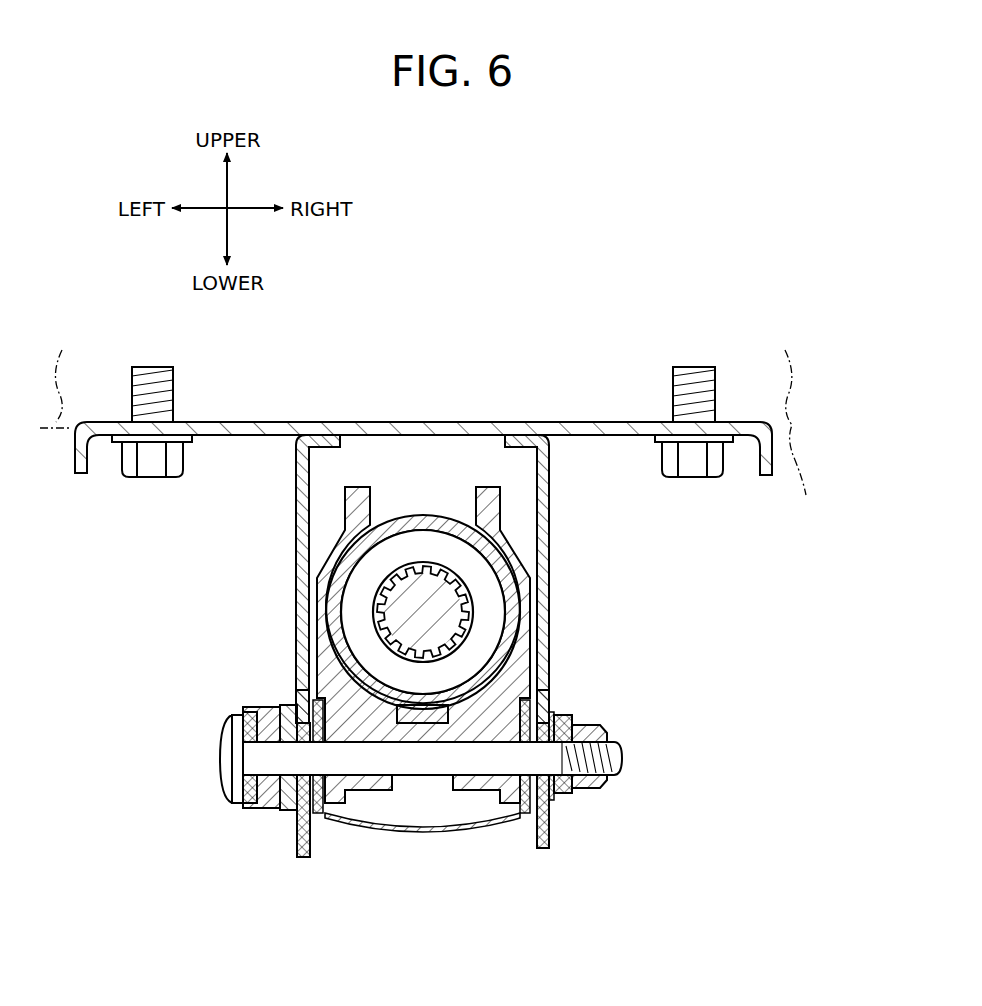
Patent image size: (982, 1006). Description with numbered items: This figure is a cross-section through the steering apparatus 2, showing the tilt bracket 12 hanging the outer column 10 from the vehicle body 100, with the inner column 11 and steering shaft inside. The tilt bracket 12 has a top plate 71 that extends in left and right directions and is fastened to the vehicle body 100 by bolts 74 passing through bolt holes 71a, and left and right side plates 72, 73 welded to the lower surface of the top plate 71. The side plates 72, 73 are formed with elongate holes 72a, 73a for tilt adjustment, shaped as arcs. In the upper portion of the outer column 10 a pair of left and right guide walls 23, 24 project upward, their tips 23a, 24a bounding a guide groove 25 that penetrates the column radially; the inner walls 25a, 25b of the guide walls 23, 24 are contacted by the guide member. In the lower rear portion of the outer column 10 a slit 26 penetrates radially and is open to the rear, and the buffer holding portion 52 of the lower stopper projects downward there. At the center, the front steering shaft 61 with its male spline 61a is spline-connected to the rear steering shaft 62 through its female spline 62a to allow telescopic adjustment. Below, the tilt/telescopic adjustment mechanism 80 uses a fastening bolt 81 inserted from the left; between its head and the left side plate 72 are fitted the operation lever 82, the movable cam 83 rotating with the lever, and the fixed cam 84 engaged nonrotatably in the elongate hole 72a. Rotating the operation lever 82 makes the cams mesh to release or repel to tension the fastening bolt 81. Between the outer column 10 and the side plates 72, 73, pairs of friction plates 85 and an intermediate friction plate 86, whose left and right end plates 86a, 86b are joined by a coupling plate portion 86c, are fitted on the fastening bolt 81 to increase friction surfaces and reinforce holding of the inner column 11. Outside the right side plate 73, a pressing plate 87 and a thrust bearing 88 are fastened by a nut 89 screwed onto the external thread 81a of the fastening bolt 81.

The steering apparatus 2 is at (684, 584).
The outer column 10 is at (522, 572).
The inner column 11 is at (419, 681).
The tilt bracket 12 is at (423, 405).
The guide wall 23 is at (294, 496).
The guide wall 23a is at (353, 500).
The guide wall 24 is at (553, 493).
The guide wall 24a is at (497, 495).
The guide groove 25 is at (415, 477).
The inner wall 25a is at (353, 512).
The inner wall 25b is at (488, 512).
The slit 26 is at (423, 788).
The buffer holding portion 52 is at (440, 715).
The front steering shaft 61 is at (417, 612).
The male spline 61a is at (390, 596).
The rear steering shaft 62 is at (418, 612).
The female spline 62a is at (395, 633).
The top plate 71 is at (414, 421).
The bolt hole 71a is at (148, 418).
The side plate 72 is at (274, 579).
The elongate hole for tilt adjustment 72a is at (300, 702).
The side plate 73 is at (576, 579).
The elongate hole for tilt adjustment 73a is at (545, 705).
The bolt 74 is at (150, 468).
The tilt/telescopic adjustment mechanism 80 is at (421, 848).
The fastening bolt 81 is at (421, 762).
The external thread 81a is at (615, 756).
The operation lever 82 is at (242, 812).
The movable cam 83 is at (255, 806).
The fixed cam 84 is at (281, 806).
The friction plate 85 is at (298, 847).
The intermediate friction plate 86 is at (420, 703).
The end plate 86a is at (320, 818).
The end plate 86b is at (525, 817).
The coupling plate portion 86c is at (423, 830).
The pressing plate 87 is at (551, 808).
The thrust bearing 88 is at (575, 797).
The nut 89 is at (603, 730).
The vehicle body 100 is at (435, 439).